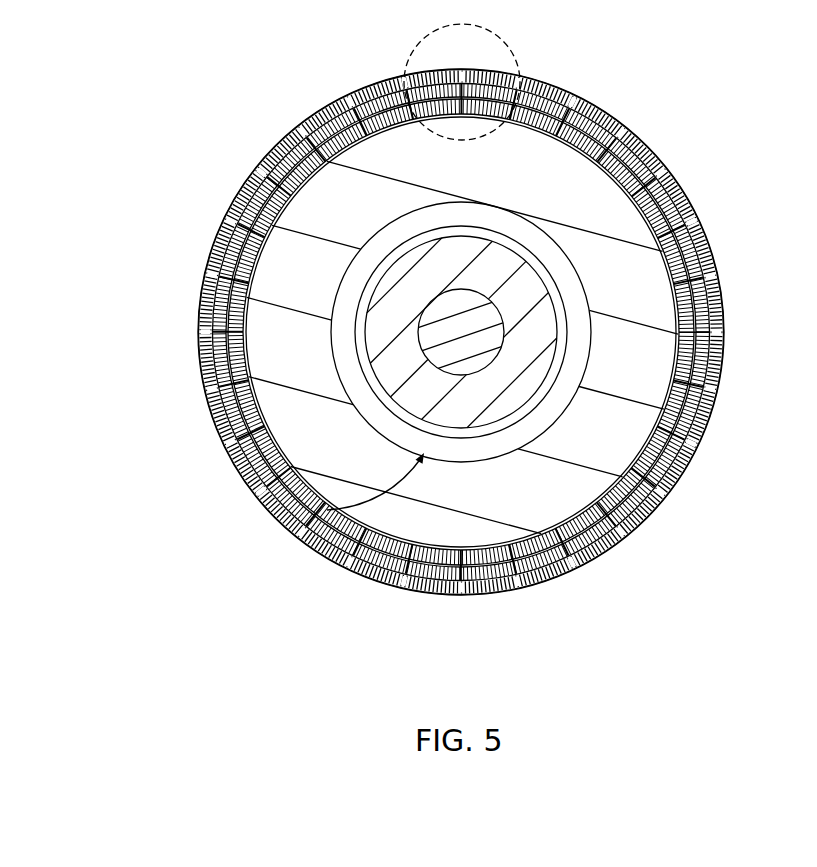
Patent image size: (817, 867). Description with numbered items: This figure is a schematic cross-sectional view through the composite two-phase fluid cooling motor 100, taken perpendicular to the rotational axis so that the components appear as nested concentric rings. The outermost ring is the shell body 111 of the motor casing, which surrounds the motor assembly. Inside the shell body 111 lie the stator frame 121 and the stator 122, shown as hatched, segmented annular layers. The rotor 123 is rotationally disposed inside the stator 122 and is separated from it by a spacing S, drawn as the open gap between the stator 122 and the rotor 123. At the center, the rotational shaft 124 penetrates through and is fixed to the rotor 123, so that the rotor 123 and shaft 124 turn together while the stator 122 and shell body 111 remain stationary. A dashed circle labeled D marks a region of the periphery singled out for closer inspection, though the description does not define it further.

The composite two-phase fluid cooling motor 100 is at (236, 104).
The shell body 111 is at (198, 332).
The stator frame 121 is at (727, 307).
The stator 122 is at (700, 225).
The rotor 123 is at (503, 400).
The rotational shaft 124 is at (462, 343).
The spacing S is at (307, 533).
The detail region D is at (513, 55).